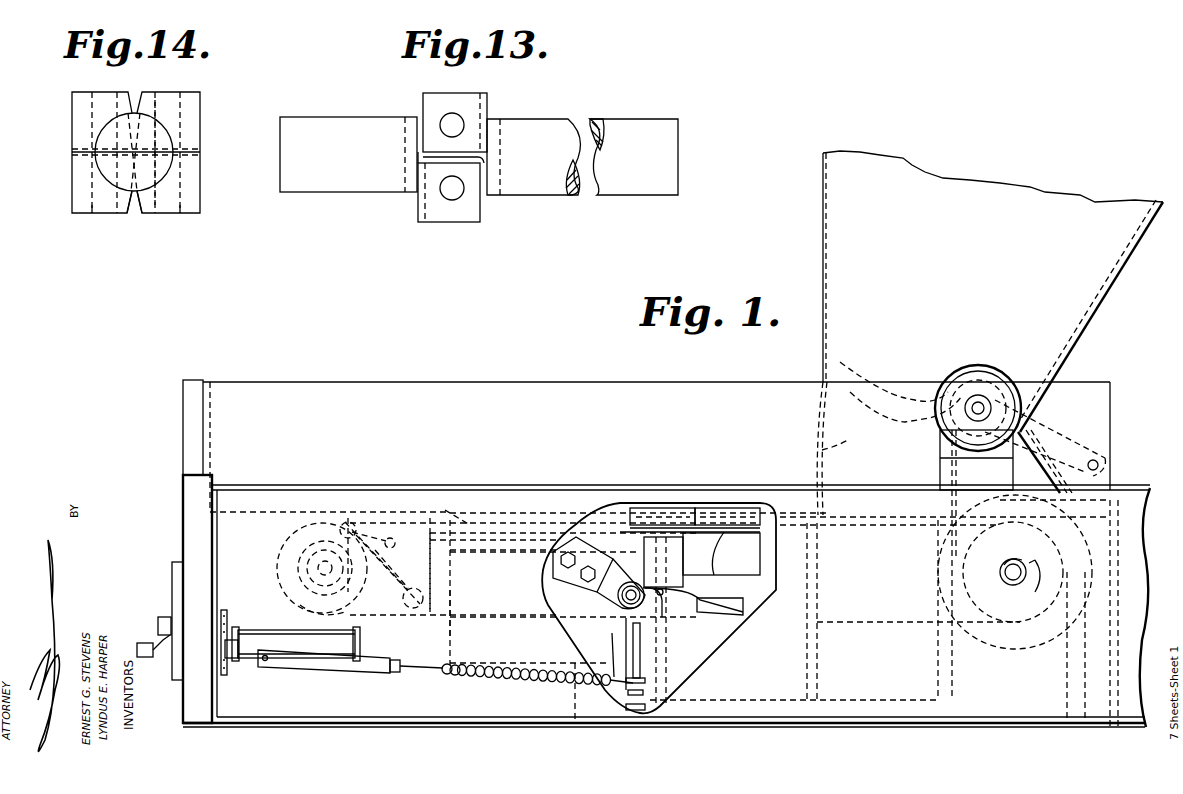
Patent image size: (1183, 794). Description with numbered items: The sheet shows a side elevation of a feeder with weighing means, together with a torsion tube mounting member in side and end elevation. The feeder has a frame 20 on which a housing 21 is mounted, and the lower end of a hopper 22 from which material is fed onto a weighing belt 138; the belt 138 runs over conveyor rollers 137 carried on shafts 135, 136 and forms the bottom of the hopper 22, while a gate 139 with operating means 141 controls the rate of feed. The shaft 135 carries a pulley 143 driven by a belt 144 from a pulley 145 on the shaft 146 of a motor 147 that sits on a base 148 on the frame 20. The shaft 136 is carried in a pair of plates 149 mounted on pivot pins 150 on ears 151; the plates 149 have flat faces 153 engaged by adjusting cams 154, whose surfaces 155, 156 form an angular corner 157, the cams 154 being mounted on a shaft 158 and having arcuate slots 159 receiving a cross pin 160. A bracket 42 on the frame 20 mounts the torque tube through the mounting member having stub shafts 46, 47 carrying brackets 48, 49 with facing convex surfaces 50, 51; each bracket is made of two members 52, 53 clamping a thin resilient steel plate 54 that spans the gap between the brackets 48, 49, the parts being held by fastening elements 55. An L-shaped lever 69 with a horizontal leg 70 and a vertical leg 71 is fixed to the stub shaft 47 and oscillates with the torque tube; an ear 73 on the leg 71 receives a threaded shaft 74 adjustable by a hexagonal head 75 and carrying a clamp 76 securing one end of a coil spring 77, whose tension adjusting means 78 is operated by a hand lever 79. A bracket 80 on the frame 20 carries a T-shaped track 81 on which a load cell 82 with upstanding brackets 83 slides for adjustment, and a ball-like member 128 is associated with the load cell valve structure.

In FIG. 1, the frame 20 is at (1147, 492).
In FIG. 1, the housing 21 is at (556, 384).
In FIG. 1, the hopper 22 is at (1090, 336).
In FIG. 1, the bracket 42 is at (565, 575).
In FIG. 14, the stub shaft 46 is at (165, 143).
In FIG. 13, the stub shaft 46 is at (350, 178).
In FIG. 1, the stub shaft 46 is at (618, 598).
In FIG. 13, the stub shaft 47 is at (555, 135).
In FIG. 14, the bracket 48 is at (200, 125).
In FIG. 13, the bracket 48 is at (432, 208).
In FIG. 14, the bracket 49 is at (72, 143).
In FIG. 13, the bracket 49 is at (432, 100).
In FIG. 14, the convex surface 50 is at (137, 205).
In FIG. 14, the convex surface 51 is at (130, 215).
In FIG. 14, the bracket member 52 is at (82, 106).
In FIG. 14, the bracket member 53 is at (78, 197).
In FIG. 14, the resilient steel plate 54 is at (78, 155).
In FIG. 14, the fastening elements 55 is at (102, 218).
In FIG. 13, the fastening elements 55 is at (460, 128).
In FIG. 1, the L-shaped lever 69 is at (622, 615).
In FIG. 1, the horizontally extending leg 70 is at (735, 612).
In FIG. 1, the vertically extending leg 71 is at (623, 650).
In FIG. 1, the ear 73 is at (648, 696).
In FIG. 1, the shaft 74 is at (641, 650).
In FIG. 1, the hexagonal head portion 75 is at (635, 715).
In FIG. 1, the clamp 76 is at (627, 700).
In FIG. 1, the coil spring 77 is at (540, 682).
In FIG. 1, the tension adjusting means 78 is at (302, 660).
In FIG. 1, the hand lever 79 is at (160, 628).
In FIG. 1, the bracket 80 is at (760, 565).
In FIG. 1, the slideway or track 81 is at (714, 568).
In FIG. 1, the load cell 82 is at (675, 592).
In FIG. 1, the upstanding brackets 83 is at (650, 532).
In FIG. 1, the ball-like member 128 is at (600, 655).
In FIG. 1, the shaft 135 is at (1018, 565).
In FIG. 1, the shaft 136 is at (290, 608).
In FIG. 1, the conveyor rollers 137 is at (990, 636).
In FIG. 1, the weighing belt 138 is at (548, 512).
In FIG. 1, the gate 139 is at (849, 441).
In FIG. 1, the operating means 141 is at (866, 372).
In FIG. 1, the pulley 143 is at (1025, 645).
In FIG. 1, the belt 144 is at (1072, 440).
In FIG. 1, the pulley 145 is at (1012, 380).
In FIG. 1, the motor shaft 146 is at (975, 405).
In FIG. 1, the motor 147 is at (985, 390).
In FIG. 1, the base 148 is at (940, 472).
In FIG. 1, the plates 149 is at (299, 568).
In FIG. 1, the pivot pins 150 is at (350, 520).
In FIG. 1, the ears 151 is at (395, 518).
In FIG. 1, the flat faces 153 is at (352, 584).
In FIG. 1, the adjusting cams 154 is at (460, 568).
In FIG. 1, the cam surface 155 is at (392, 550).
In FIG. 1, the cam surface 156 is at (392, 608).
In FIG. 1, the angular corner 157 is at (394, 569).
In FIG. 1, the shaft 158 is at (458, 590).
In FIG. 1, the arcuate slots 159 is at (470, 506).
In FIG. 1, the cross pin 160 is at (448, 515).